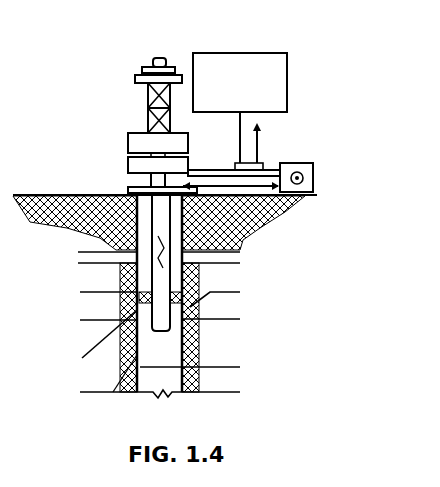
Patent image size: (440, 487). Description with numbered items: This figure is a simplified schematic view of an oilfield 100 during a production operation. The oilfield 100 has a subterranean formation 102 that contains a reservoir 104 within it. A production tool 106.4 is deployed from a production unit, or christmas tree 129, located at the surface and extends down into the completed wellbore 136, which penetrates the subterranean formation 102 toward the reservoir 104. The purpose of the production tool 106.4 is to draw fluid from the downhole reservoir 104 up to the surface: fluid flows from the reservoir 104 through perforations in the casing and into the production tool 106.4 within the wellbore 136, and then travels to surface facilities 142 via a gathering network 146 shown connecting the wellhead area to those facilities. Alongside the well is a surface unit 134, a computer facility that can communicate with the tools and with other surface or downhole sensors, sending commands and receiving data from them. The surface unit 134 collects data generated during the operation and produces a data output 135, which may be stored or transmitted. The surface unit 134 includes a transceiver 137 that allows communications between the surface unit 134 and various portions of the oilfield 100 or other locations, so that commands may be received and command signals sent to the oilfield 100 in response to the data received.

The oilfield 100 is at (77, 106).
The christmas tree 129 is at (159, 58).
The data output 135 is at (258, 54).
The surface unit 134 is at (233, 164).
The transceiver 137 is at (262, 145).
The surface facilities 142 is at (314, 177).
The gathering network 146 is at (281, 197).
The completed wellbore 136 is at (190, 228).
The subterranean formation 102 is at (255, 298).
The reservoir 104 is at (239, 353).
The production tool 106.4 is at (130, 312).